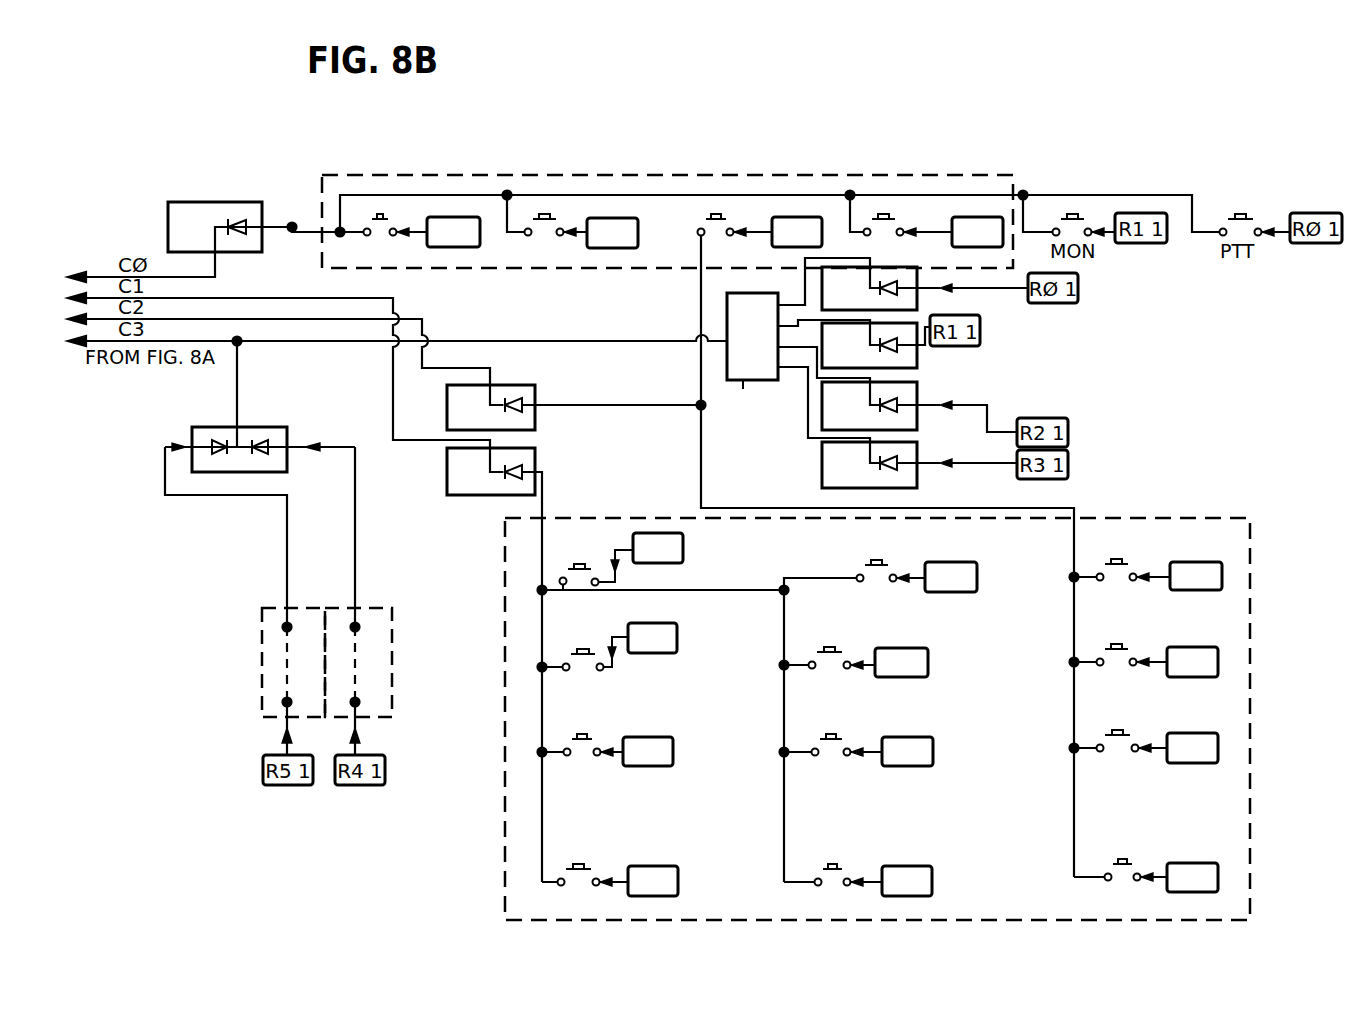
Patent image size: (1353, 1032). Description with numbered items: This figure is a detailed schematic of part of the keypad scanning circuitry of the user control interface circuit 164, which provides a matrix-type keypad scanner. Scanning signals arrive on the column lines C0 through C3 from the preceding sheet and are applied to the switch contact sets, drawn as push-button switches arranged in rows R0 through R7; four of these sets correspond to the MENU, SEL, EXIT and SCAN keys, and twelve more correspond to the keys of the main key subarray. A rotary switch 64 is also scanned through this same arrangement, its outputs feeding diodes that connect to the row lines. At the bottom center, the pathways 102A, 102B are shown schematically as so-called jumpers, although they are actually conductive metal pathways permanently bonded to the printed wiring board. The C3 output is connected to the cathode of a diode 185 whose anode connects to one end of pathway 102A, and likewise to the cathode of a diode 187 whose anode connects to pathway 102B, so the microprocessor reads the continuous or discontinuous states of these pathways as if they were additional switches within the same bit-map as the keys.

The user control interface circuit 164 is at (786, 126).
The rotary switch 64 is at (727, 318).
The diode 185 is at (215, 440).
The diode 187 is at (265, 440).
The pathway 102A is at (262, 690).
The pathway 102B is at (392, 665).